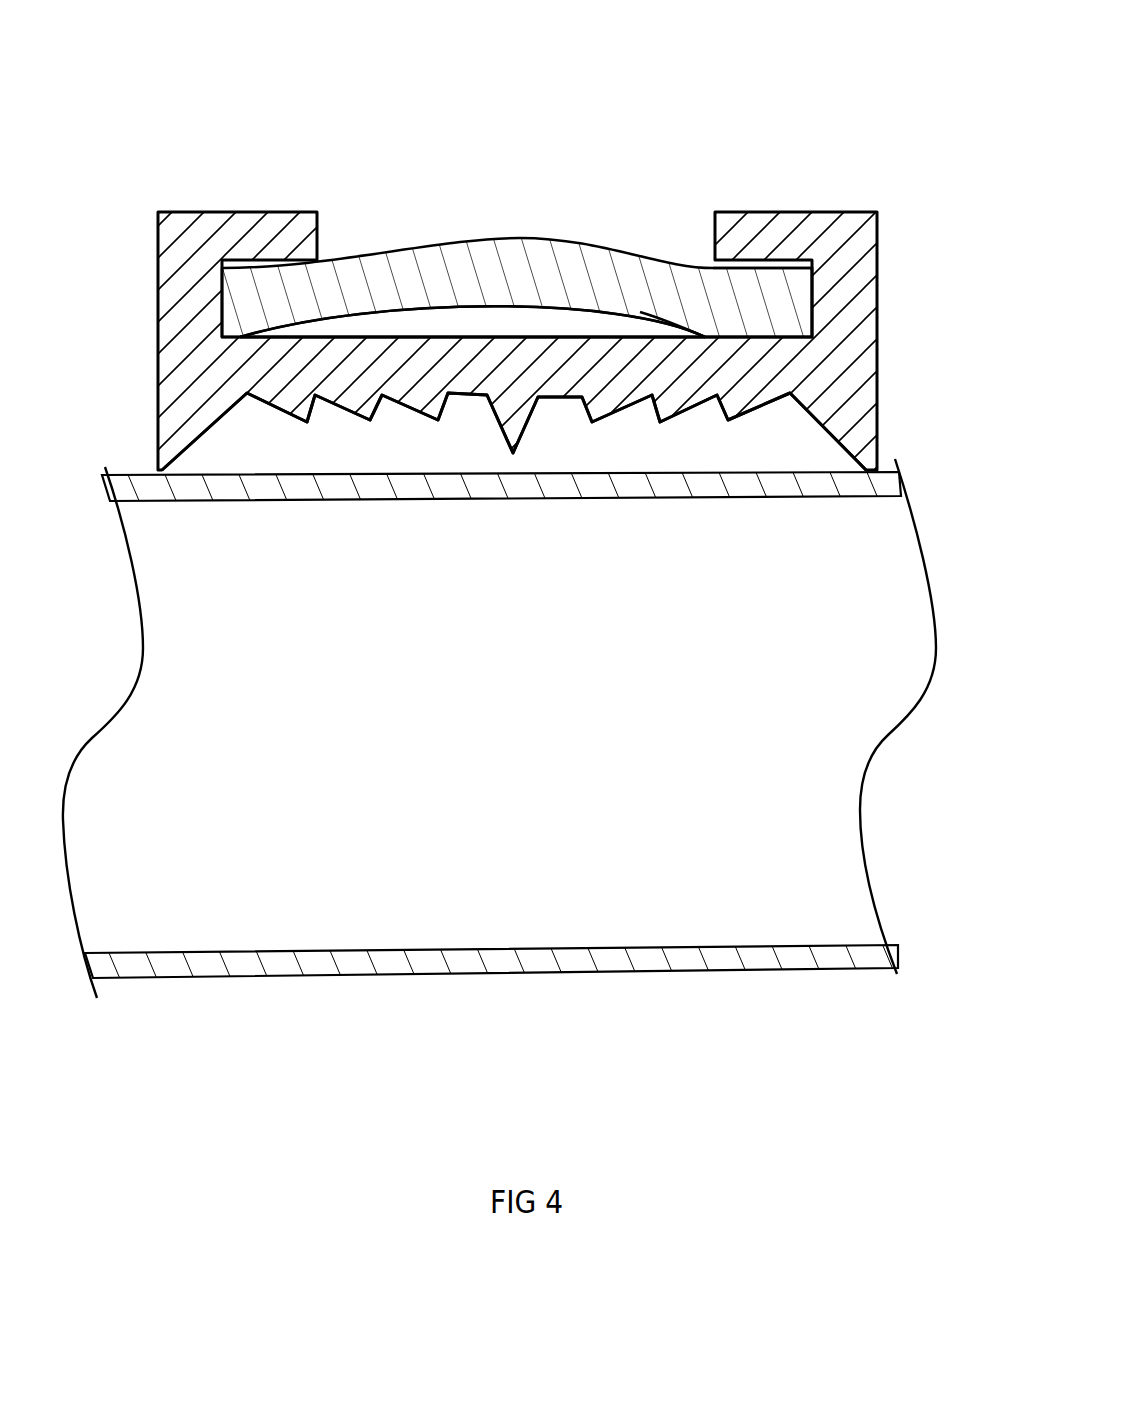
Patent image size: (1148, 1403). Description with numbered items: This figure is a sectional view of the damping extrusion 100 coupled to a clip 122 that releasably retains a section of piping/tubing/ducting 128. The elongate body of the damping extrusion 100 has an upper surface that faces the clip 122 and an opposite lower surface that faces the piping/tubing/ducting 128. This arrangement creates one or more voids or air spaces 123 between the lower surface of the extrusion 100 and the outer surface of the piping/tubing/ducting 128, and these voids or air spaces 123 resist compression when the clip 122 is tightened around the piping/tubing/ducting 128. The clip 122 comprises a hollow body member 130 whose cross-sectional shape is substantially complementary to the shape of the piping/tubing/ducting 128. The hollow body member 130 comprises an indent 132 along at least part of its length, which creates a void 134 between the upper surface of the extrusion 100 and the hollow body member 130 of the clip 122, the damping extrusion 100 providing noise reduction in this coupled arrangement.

The damping extrusion 100 is at (810, 187).
The clip 122 is at (458, 222).
The voids or air spaces 123 is at (412, 460).
The piping/tubing/ducting 128 is at (762, 950).
The hollow body member 130 is at (720, 293).
The indent 132 is at (550, 302).
The void 134 is at (453, 327).